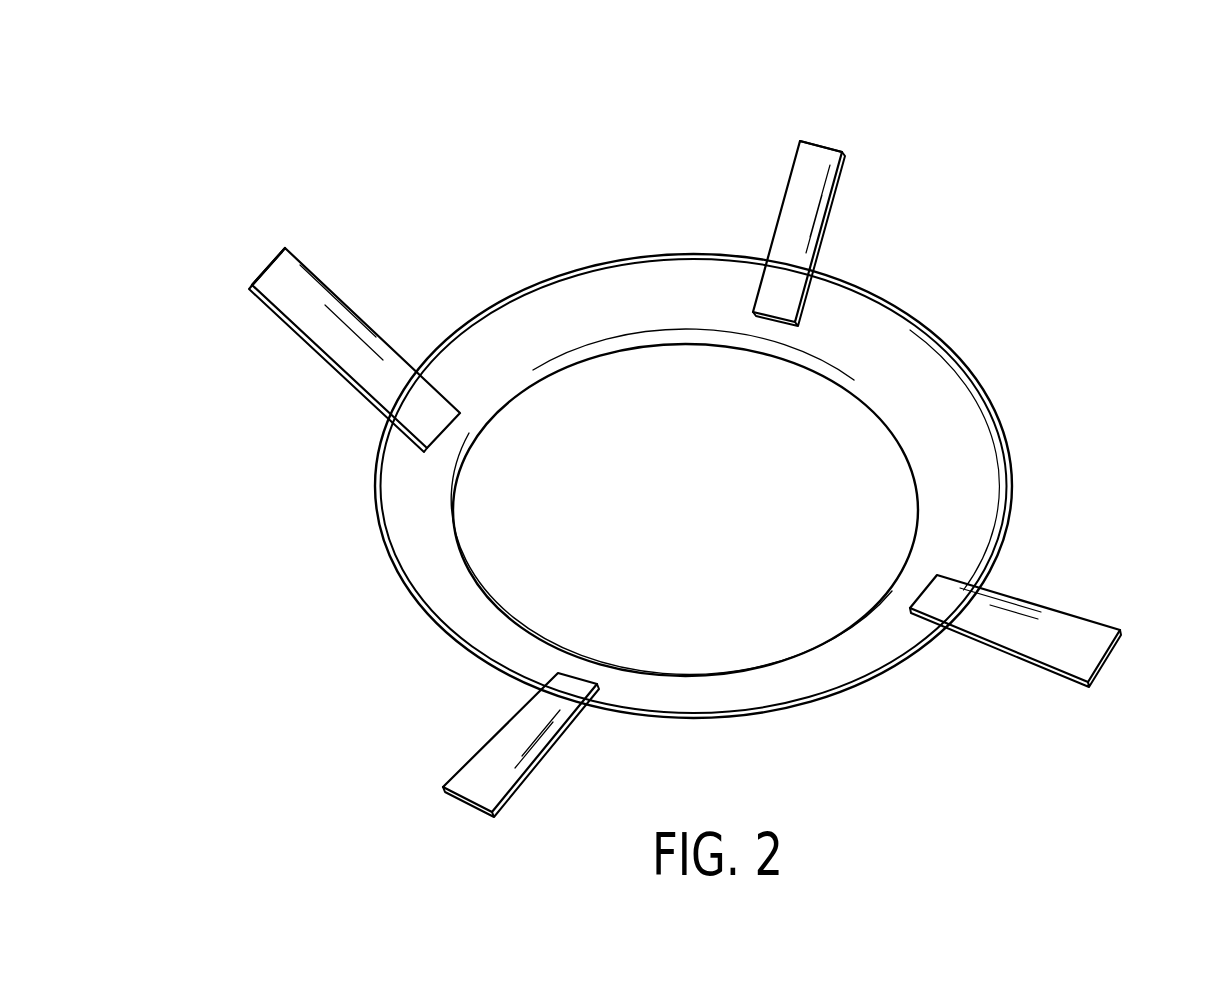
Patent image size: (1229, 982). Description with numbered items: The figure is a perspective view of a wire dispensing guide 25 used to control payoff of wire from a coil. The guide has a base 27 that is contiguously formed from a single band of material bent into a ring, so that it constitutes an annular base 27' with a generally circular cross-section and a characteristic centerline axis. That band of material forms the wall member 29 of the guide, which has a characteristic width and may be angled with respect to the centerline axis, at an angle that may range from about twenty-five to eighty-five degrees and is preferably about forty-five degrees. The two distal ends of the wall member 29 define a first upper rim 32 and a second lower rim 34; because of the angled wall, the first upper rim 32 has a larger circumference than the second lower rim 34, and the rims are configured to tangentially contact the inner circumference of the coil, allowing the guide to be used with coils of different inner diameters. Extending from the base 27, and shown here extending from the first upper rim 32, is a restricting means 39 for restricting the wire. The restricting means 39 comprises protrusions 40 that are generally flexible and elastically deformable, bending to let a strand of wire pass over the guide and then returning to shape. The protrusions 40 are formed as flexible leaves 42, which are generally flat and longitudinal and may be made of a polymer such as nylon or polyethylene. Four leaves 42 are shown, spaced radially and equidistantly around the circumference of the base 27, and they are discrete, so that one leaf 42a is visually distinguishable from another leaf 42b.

The wire dispensing guide 25 is at (730, 469).
The base 27 is at (717, 486).
The annular base 27' is at (995, 460).
The wall member 29 is at (442, 598).
The first upper rim 32 is at (1022, 502).
The second lower rim 34 is at (897, 503).
The restricting means 39 is at (845, 183).
The protrusions 40 is at (795, 206).
The flexible leaves 42 is at (795, 180).
The leaf 42a is at (285, 293).
The leaf 42b is at (813, 152).